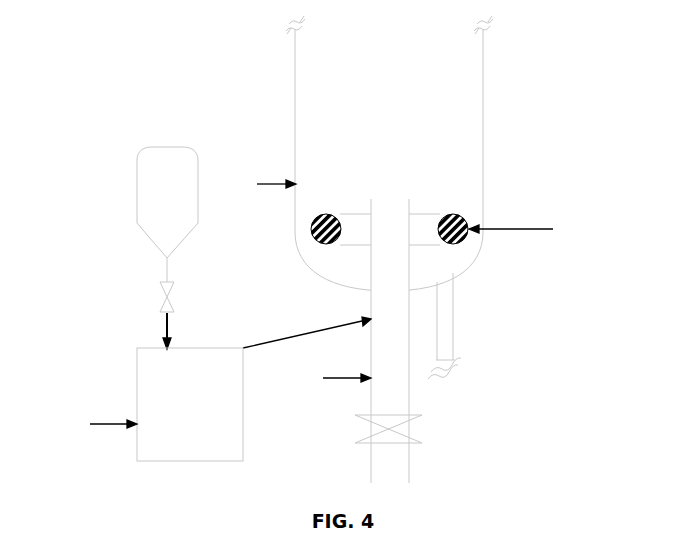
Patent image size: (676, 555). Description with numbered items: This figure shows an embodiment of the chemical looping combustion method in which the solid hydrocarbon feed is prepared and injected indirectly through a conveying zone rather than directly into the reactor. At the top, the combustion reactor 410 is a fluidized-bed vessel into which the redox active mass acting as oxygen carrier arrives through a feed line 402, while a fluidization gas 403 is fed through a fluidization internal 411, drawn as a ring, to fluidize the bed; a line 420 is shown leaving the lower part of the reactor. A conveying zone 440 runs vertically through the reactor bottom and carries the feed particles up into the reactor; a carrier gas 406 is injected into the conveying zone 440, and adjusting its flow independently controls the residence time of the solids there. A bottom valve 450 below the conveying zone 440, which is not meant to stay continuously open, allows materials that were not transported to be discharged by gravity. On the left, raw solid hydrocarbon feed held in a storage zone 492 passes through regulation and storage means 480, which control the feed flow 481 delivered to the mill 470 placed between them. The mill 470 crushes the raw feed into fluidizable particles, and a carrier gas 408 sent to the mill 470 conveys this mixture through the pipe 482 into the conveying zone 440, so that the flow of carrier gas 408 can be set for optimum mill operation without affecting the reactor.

The feed line 402 is at (273, 184).
The fluidization gas 403 is at (515, 229).
The carrier gas 406 is at (349, 380).
The carrier gas 408 is at (106, 424).
The combustion reactor 410 is at (484, 81).
The fluidization internal 411 is at (438, 212).
The drain conduit 420 is at (454, 322).
The conveying zone 440 is at (371, 343).
The bottom valve 450 is at (375, 435).
The mill 470 is at (137, 363).
The regulation and storage means 480 is at (162, 306).
The catalyst feed stream 481 is at (170, 316).
The pipe 482 is at (323, 330).
The storage zone 492 is at (147, 147).